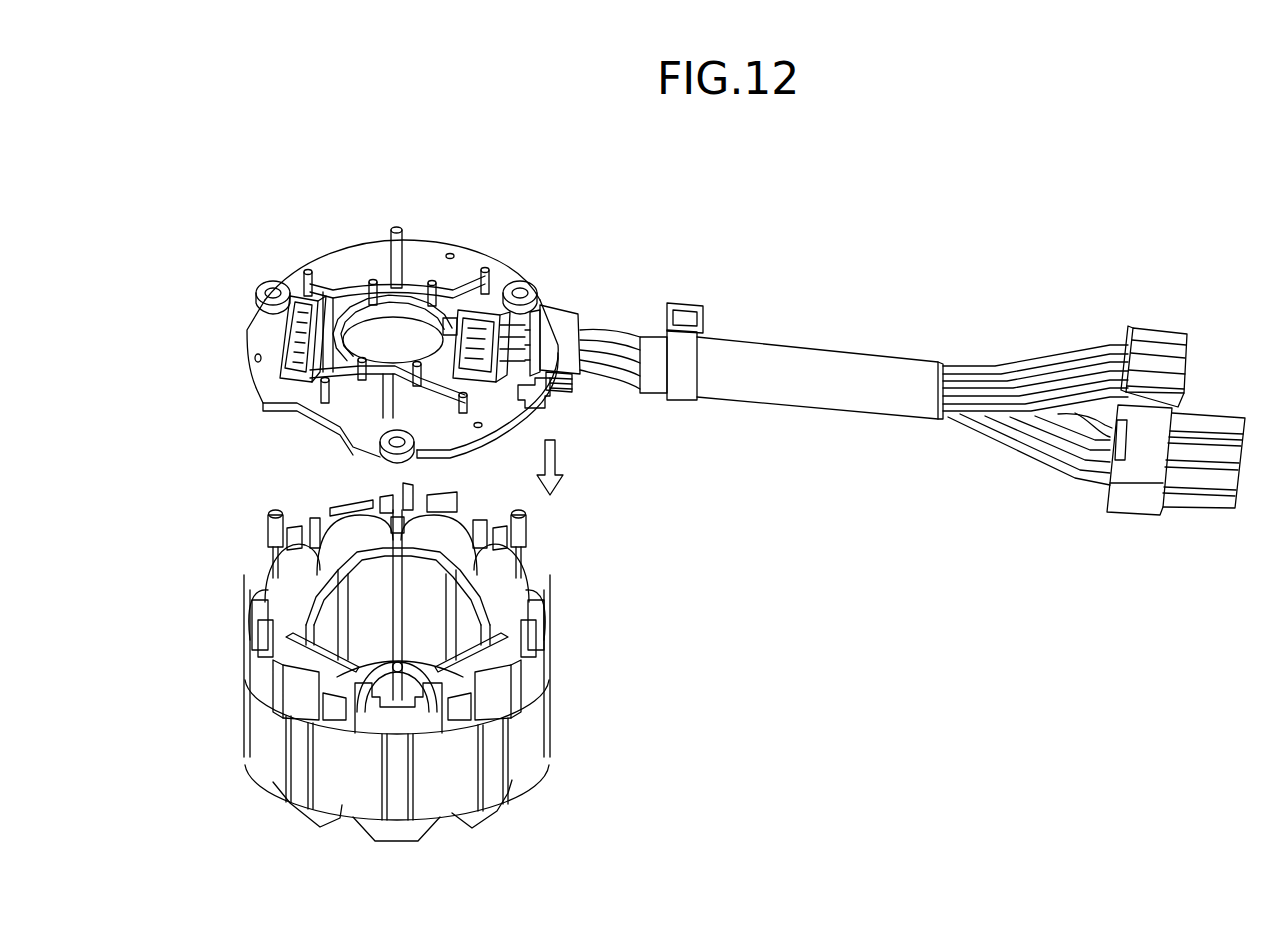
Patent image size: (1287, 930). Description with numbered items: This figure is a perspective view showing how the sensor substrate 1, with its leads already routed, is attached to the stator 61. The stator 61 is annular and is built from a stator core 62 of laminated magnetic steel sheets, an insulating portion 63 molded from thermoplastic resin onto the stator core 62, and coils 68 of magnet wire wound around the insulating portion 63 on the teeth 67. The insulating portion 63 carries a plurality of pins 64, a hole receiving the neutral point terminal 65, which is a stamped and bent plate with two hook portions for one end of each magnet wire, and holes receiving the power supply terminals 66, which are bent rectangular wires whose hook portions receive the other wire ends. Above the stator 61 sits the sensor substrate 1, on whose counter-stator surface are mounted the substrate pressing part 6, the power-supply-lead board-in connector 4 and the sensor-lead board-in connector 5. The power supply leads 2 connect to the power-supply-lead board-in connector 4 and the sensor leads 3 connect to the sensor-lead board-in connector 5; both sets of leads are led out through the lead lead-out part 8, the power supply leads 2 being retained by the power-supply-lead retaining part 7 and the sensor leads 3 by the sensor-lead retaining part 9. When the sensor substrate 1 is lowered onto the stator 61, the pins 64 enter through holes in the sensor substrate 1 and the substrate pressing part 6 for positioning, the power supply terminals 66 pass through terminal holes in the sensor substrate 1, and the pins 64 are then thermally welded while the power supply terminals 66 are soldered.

The sensor substrate 1 is at (360, 270).
The power supply leads 2 is at (1070, 470).
The sensor leads 3 is at (515, 345).
The power-supply-lead board-in connector 4 is at (315, 315).
The sensor-lead board-in connector 5 is at (495, 333).
The substrate pressing part 6 is at (400, 258).
The power-supply-lead retaining part 7 is at (580, 395).
The lead lead-out part 8 is at (573, 388).
The sensor-lead retaining part 9 is at (555, 340).
The stator 61 is at (275, 720).
The stator core 62 is at (530, 687).
The insulating portion 63 is at (505, 700).
The pins 64 is at (530, 535).
The neutral point terminal 65 is at (340, 650).
The power supply terminals 66 is at (480, 672).
The teeth 67 is at (365, 593).
The coils 68 is at (345, 540).